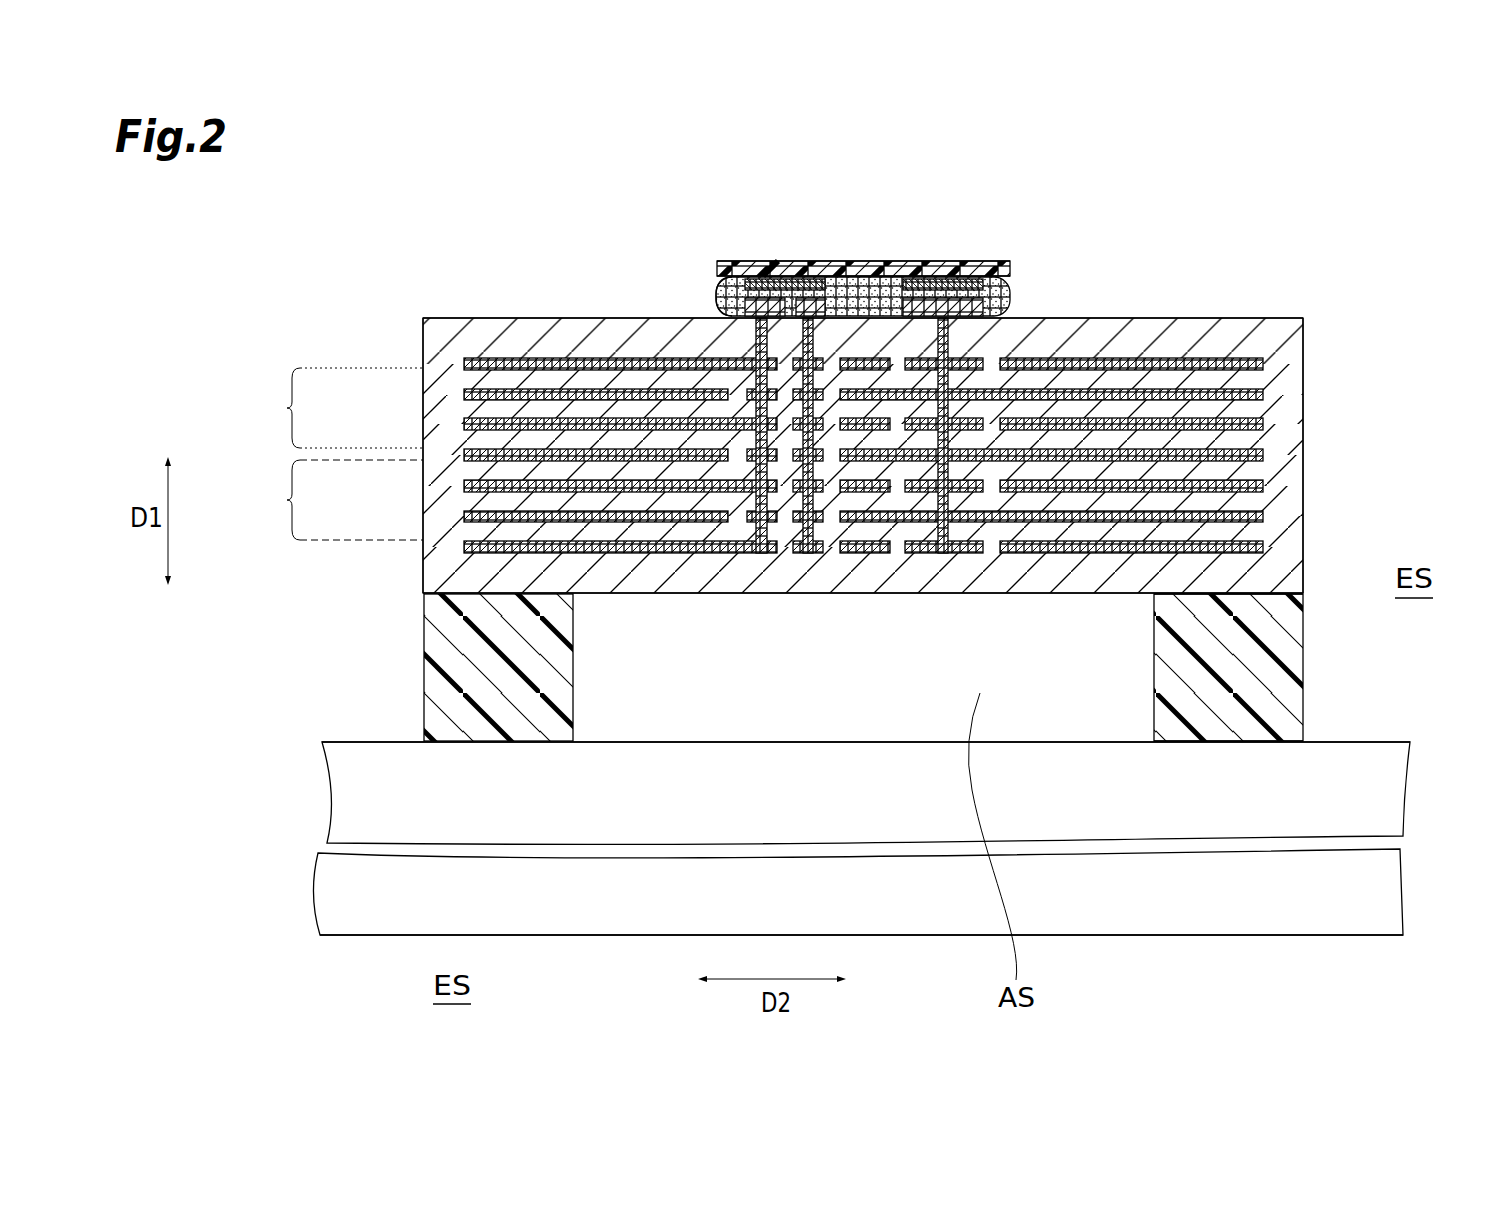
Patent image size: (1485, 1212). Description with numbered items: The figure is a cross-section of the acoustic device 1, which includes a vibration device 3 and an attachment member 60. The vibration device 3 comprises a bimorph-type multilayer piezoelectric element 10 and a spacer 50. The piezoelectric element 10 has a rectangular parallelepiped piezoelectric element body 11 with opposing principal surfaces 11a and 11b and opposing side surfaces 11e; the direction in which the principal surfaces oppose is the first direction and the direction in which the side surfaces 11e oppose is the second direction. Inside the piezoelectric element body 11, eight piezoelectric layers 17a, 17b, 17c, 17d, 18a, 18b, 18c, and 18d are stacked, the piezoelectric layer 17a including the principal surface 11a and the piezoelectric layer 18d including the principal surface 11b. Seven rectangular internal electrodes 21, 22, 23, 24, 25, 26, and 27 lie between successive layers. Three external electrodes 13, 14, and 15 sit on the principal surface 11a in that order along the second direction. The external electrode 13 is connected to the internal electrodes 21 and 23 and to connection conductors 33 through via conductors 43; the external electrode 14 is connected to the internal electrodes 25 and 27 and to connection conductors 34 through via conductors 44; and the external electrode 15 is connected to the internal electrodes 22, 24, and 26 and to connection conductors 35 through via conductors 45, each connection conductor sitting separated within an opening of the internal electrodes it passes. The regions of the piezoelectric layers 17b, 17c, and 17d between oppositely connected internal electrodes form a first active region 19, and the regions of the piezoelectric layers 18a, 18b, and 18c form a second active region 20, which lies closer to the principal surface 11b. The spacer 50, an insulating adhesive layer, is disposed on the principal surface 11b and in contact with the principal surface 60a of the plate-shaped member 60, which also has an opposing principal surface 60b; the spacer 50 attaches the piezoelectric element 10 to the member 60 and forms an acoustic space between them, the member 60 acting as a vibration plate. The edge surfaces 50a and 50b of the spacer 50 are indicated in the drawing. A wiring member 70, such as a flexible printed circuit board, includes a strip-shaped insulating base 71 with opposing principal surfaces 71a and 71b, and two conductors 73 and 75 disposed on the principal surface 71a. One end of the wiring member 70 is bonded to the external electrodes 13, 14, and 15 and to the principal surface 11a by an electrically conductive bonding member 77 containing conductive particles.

The acoustic device 1 is at (183, 683).
The vibration device 3 is at (375, 663).
The piezoelectric element 10 is at (396, 326).
The piezoelectric element body 11 is at (1283, 317).
The principal surface 11a is at (590, 318).
The principal surface 11b is at (589, 593).
The side surfaces 11e is at (423, 330).
The external electrode 13 is at (758, 285).
The external electrode 14 is at (820, 279).
The external electrode 15 is at (987, 288).
The piezoelectric layer 17a is at (508, 340).
The piezoelectric layer 17b is at (482, 383).
The piezoelectric layer 17c is at (495, 410).
The piezoelectric layer 17d is at (488, 440).
The piezoelectric layer 18a is at (483, 473).
The piezoelectric layer 18b is at (475, 503).
The piezoelectric layer 18c is at (480, 532).
The piezoelectric layer 18d is at (482, 568).
The first active region 19 is at (337, 408).
The second active region 20 is at (337, 500).
The internal electrode 21 is at (1265, 362).
The internal electrode 22 is at (1265, 392).
The internal electrode 23 is at (1265, 423).
The internal electrode 24 is at (1265, 455).
The internal electrode 25 is at (1265, 486).
The internal electrode 26 is at (1265, 516).
The internal electrode 27 is at (1265, 548).
The connection conductors 33 is at (750, 394).
The connection conductors 34 is at (810, 416).
The connection conductors 35 is at (948, 420).
The via conductors 43 is at (786, 553).
The via conductors 44 is at (816, 522).
The via conductors 45 is at (912, 553).
The spacer 50 is at (423, 678).
The upper surface of metal terminal 50a is at (1262, 594).
The lower surface of metal terminal 50b is at (1205, 742).
The attachment member 60 is at (332, 792).
The principal surface 60a is at (1340, 742).
The principal surface 60b is at (1330, 935).
The wiring member 70 is at (717, 260).
The base 71 is at (893, 267).
The principal surface 71a is at (1012, 273).
The principal surface 71b is at (997, 261).
The conductor 73 is at (771, 262).
The conductor 75 is at (945, 272).
The bonding member 77 is at (717, 288).